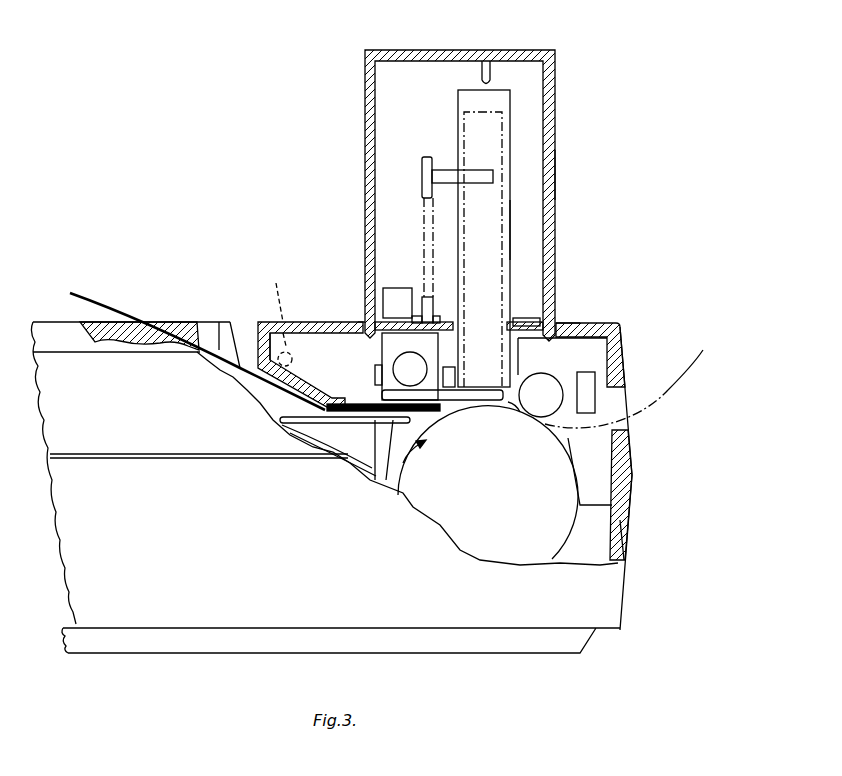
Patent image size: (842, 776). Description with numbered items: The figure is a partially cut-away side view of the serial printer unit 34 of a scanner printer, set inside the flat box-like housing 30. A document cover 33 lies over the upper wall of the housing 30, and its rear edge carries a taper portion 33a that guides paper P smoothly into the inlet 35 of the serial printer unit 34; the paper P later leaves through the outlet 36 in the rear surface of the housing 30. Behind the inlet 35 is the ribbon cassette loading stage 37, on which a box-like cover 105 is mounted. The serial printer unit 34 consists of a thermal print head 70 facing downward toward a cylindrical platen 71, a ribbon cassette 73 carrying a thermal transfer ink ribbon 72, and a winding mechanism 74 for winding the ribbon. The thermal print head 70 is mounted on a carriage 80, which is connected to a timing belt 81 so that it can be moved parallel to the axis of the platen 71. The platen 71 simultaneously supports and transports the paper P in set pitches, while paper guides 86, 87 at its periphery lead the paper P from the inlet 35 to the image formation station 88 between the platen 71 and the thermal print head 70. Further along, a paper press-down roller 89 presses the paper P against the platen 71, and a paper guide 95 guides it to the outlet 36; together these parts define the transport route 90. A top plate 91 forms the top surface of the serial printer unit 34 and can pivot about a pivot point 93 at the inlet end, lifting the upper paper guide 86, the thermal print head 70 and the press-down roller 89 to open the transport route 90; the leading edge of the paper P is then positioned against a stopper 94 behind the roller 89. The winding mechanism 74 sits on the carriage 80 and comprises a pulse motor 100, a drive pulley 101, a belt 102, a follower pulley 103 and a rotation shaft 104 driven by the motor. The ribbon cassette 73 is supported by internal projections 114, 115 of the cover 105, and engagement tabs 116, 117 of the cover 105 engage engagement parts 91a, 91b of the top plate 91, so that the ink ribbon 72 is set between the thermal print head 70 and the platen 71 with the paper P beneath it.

The housing 30 is at (605, 611).
The document cover 33 is at (47, 332).
The taper portion 33a is at (183, 338).
The serial printer unit 34 is at (603, 546).
The inlet 35 is at (245, 364).
The outlet 36 is at (615, 410).
The ribbon cassette loading stage 37 is at (568, 304).
The thermal print head 70 is at (490, 404).
The cylindrical platen 71 is at (492, 518).
The thermal transfer ink ribbon 72 is at (493, 137).
The ribbon cassette 73 is at (512, 230).
The winding mechanism 74 is at (383, 204).
The carriage 80 is at (350, 412).
The timing belt 81 is at (375, 375).
The upper paper guide 86 is at (317, 416).
The paper guide 87 is at (383, 483).
The image formation station 88 is at (483, 404).
The paper press-down roller 89 is at (544, 380).
The transport route 90 is at (516, 412).
The top plate 91 is at (303, 321).
The engagement part 91a is at (362, 332).
The engagement part 91b is at (553, 339).
The pivot point 93 is at (277, 324).
The stopper 94 is at (590, 383).
The paper guide 95 is at (610, 476).
The pulse motor 100 is at (375, 294).
The drive pulley 101 is at (432, 300).
The belt 102 is at (433, 223).
The follower pulley 103 is at (422, 163).
The rotation shaft 104 is at (447, 169).
The cover 105 is at (553, 173).
The internal projection 114 is at (387, 300).
The internal projection 115 is at (535, 319).
The engagement tab 116 is at (360, 338).
The engagement tab 117 is at (547, 328).
The paper P is at (131, 314).